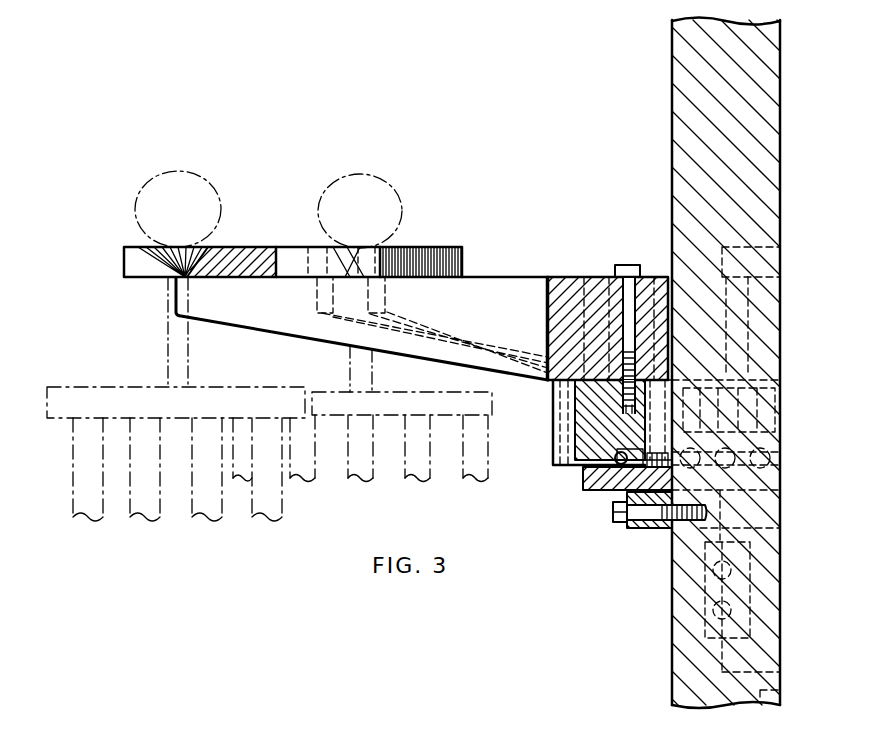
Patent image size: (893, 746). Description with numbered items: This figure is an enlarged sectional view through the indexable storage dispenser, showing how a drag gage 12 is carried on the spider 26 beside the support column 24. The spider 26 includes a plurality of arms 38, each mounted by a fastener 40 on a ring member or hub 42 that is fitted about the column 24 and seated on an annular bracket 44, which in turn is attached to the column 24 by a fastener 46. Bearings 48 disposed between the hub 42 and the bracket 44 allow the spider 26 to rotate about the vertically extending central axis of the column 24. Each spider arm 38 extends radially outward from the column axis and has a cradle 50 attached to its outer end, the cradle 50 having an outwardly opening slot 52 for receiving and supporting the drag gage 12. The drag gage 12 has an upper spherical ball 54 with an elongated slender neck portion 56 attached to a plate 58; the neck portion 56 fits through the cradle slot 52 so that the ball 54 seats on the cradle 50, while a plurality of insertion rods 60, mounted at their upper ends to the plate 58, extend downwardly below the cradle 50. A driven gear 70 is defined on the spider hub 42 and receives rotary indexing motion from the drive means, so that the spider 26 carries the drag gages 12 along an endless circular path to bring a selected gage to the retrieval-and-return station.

The drag gage 12 is at (75, 511).
The support column 24 is at (672, 68).
The spider 26 is at (511, 274).
The spider arm 38 is at (262, 332).
The fastener 40 is at (618, 265).
The hub 42 is at (594, 408).
The annular bracket 44 is at (606, 492).
The fastener 46 is at (640, 528).
The bearing 48 is at (583, 476).
The cradle 50 is at (283, 247).
The slot 52 is at (124, 263).
The spherical ball 54 is at (316, 214).
The neck portion 56 is at (166, 332).
The plate 58 is at (110, 387).
The insertion rod 60 is at (132, 517).
The driven gear 70 is at (553, 440).